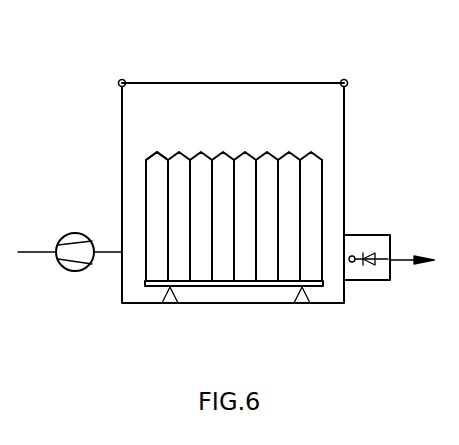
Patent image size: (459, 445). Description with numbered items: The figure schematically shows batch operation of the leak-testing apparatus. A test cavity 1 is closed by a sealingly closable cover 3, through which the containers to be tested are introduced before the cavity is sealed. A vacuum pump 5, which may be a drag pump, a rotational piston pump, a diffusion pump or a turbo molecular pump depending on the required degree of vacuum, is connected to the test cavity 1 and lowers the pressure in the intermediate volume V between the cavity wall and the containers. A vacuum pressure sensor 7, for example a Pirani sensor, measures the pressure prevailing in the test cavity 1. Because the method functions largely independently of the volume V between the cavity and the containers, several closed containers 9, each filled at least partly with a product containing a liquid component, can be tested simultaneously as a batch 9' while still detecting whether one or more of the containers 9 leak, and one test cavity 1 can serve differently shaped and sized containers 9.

The test cavity 1 is at (345, 118).
The cover 3 is at (232, 82).
The vacuum pump 5 is at (77, 271).
The vacuum pressure sensor 7 is at (373, 235).
The container 9 is at (234, 202).
The batch of containers 9' is at (120, 216).